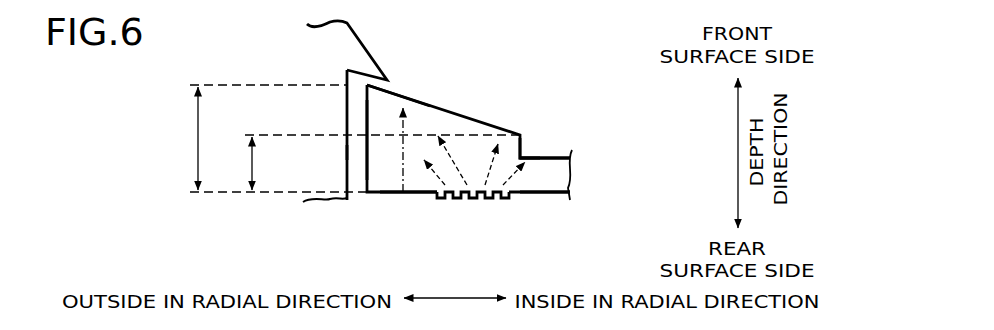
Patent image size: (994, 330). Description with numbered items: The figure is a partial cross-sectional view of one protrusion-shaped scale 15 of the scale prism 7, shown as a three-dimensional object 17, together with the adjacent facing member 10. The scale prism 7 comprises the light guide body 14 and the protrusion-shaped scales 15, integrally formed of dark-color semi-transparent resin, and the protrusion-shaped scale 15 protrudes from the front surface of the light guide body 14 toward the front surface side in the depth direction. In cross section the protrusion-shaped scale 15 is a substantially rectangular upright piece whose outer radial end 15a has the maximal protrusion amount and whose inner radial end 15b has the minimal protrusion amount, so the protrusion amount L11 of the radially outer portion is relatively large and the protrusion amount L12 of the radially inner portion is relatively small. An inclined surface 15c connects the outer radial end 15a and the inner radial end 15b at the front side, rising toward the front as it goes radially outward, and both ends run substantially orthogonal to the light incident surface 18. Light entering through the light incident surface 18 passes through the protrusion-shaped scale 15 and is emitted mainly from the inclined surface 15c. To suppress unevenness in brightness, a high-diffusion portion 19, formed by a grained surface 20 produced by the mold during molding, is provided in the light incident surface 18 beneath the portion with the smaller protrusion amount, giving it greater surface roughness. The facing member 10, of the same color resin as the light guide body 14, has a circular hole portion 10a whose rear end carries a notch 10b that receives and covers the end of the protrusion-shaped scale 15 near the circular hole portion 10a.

The scale prism 7 is at (456, 144).
The facing member 10 is at (333, 107).
The circular hole portion 10a is at (366, 47).
The notch 10b is at (357, 152).
The light guide body 14 is at (558, 154).
The protrusion-shaped scale 15 is at (456, 147).
The three-dimensional object 17 is at (468, 121).
The outer radial end 15a is at (367, 168).
The inner radial end 15b is at (540, 160).
The inclined surface 15c is at (410, 99).
The light incident surface 18 is at (413, 196).
The high-diffusion portion 19 is at (475, 226).
The grained surface 20 is at (466, 201).
The protrusion amount of the portion at the outside in the radial direction L11 is at (177, 138).
The protrusion amount of the portion at the inside in the radial direction L12 is at (231, 163).